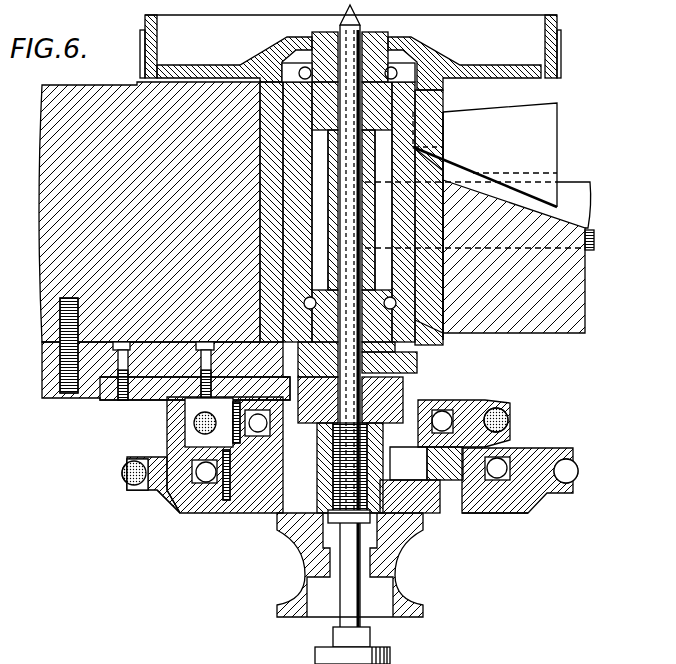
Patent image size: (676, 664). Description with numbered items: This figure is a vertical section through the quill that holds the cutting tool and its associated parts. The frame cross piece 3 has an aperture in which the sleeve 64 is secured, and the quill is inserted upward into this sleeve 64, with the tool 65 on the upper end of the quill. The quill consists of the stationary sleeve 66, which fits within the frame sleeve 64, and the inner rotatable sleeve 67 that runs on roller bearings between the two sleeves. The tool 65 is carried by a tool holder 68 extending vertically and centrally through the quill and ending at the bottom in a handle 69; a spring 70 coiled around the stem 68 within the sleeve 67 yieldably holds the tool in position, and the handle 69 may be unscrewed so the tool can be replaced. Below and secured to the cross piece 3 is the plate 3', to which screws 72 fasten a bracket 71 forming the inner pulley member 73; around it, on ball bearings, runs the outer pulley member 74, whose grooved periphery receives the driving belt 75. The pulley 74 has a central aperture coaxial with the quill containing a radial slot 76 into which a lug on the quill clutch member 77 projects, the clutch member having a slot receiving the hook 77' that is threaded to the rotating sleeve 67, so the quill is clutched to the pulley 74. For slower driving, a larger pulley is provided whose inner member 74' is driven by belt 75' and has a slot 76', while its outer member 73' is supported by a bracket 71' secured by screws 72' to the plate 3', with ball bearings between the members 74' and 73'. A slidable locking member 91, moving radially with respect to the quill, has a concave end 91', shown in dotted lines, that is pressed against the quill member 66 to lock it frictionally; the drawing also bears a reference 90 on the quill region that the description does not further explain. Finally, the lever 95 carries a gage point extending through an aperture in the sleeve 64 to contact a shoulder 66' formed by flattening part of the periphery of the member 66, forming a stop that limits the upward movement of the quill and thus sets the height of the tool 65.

The frame cross piece 3 is at (329, 241).
The plate 3' is at (52, 376).
The sleeve 64 is at (448, 322).
The tool 65 is at (364, 20).
The stationary sleeve 66 is at (475, 217).
The shoulder 66' is at (462, 155).
The inner rotatable sleeve 67 is at (385, 48).
The tool holder 68 is at (333, 29).
The handle 69 is at (392, 648).
The spring 70 is at (400, 515).
The bracket 71 is at (376, 398).
The bracket 71' is at (190, 419).
The screws 72 is at (164, 393).
The screws 72' is at (100, 388).
The inner pulley member 73 is at (225, 471).
The outer member 73' is at (524, 470).
The outer pulley member 74 is at (151, 497).
The inner member 74' is at (179, 521).
The driving belt 75 is at (484, 423).
The belt 75' is at (370, 451).
The radial slot 76 is at (432, 495).
The slot 76' is at (511, 529).
The quill clutch member 77 is at (402, 496).
The hook 77' is at (258, 481).
The quill 90 is at (415, 353).
The slidable locking member 91 is at (593, 205).
The concave end 91' is at (536, 173).
The lever 95 is at (502, 150).